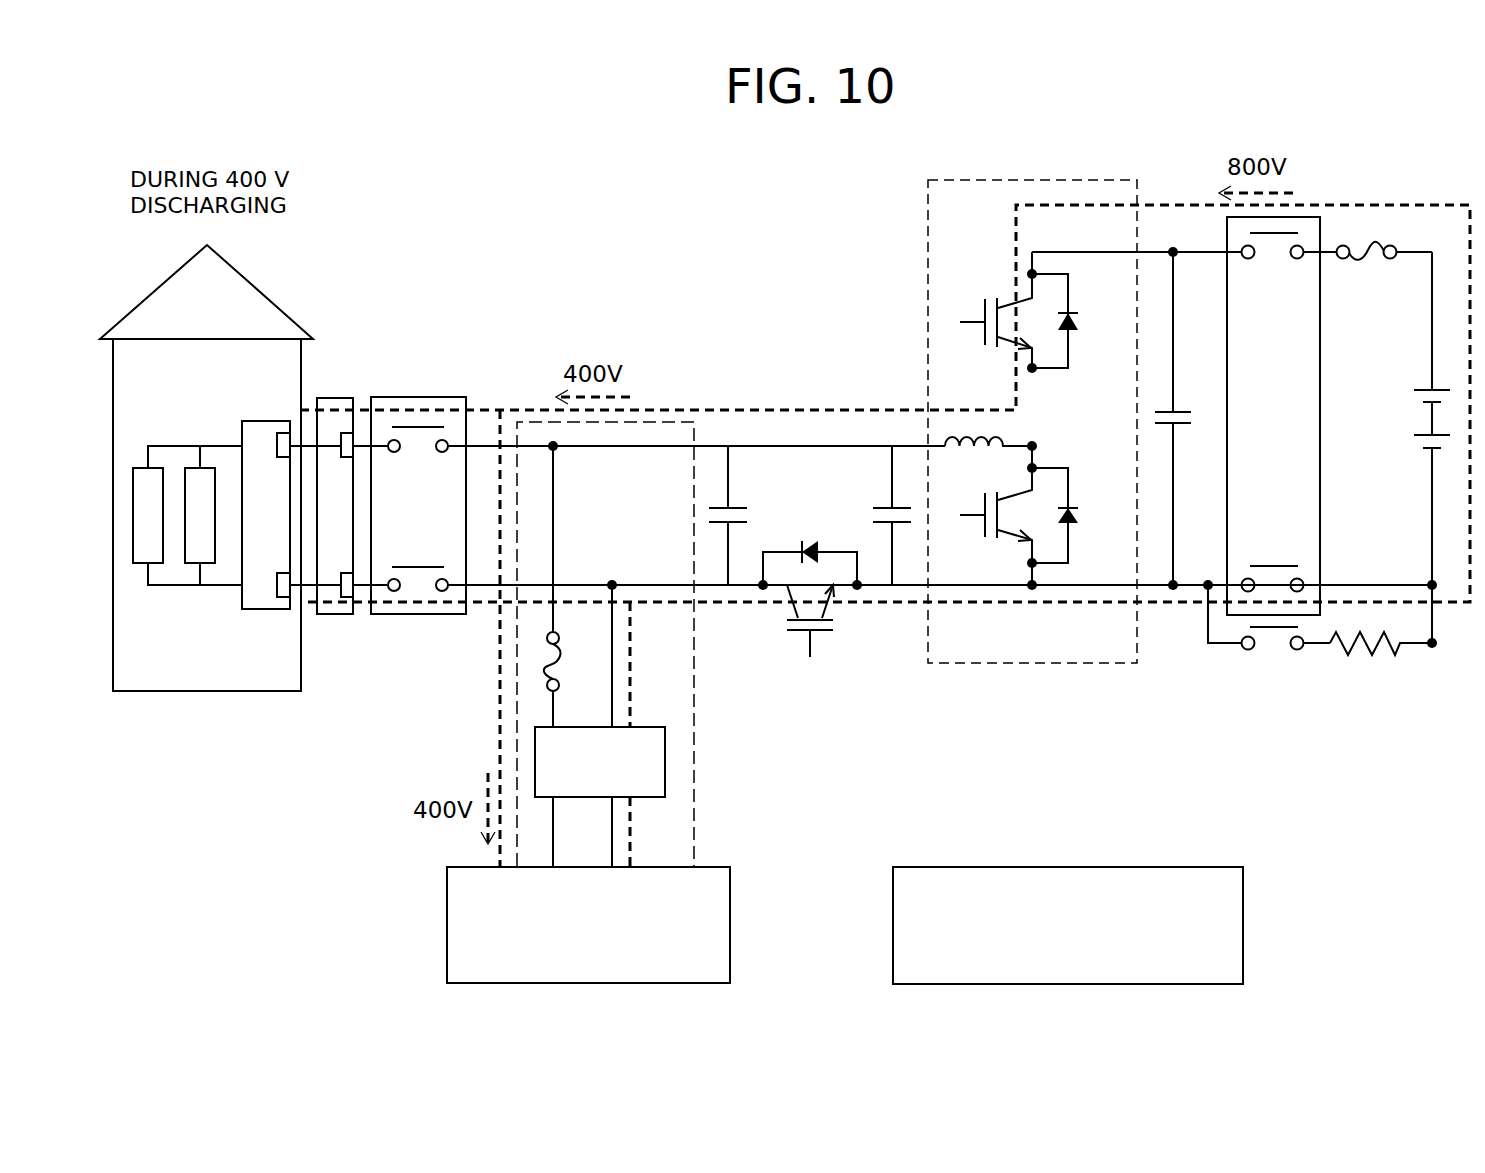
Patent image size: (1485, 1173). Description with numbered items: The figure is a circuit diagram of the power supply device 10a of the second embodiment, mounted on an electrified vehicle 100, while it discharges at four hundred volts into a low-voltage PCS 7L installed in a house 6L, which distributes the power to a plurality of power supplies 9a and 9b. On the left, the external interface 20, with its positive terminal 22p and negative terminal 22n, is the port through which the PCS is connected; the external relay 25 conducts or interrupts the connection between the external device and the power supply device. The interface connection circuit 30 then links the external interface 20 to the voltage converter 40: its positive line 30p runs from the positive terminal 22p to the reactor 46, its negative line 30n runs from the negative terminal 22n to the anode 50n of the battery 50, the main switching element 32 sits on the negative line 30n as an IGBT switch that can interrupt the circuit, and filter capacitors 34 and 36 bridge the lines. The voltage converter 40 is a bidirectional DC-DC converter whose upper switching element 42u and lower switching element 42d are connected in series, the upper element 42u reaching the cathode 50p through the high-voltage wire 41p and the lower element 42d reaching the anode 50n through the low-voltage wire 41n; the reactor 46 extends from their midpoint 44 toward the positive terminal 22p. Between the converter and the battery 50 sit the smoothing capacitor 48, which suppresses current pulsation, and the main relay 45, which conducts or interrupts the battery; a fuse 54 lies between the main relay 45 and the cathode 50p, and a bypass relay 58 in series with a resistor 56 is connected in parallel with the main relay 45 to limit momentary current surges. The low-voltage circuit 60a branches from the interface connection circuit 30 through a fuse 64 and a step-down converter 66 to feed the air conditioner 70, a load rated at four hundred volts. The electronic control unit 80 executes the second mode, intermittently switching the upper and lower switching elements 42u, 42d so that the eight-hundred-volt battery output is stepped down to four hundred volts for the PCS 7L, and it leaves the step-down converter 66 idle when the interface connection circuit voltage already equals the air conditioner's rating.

The house 6L is at (173, 298).
The low-voltage PCS 7L is at (262, 612).
The power supply 9a is at (200, 515).
The power supply 9b is at (149, 515).
The external interface 20 is at (333, 617).
The positive terminal 22p is at (355, 443).
The negative terminal 22n is at (350, 588).
The external relay 25 is at (440, 397).
The interface connection circuit 30 is at (778, 453).
The positive line 30p is at (827, 445).
The negative line 30n is at (880, 590).
The main switching element 32 is at (810, 668).
The filter capacitor 34 is at (745, 461).
The filter capacitor 36 is at (877, 461).
The voltage converter 40 is at (1000, 180).
The high-voltage wire 41p is at (1153, 247).
The low-voltage wire 41n is at (1192, 590).
The upper switching element 42u is at (1050, 263).
The lower switching element 42d is at (1050, 573).
The midpoint 44 is at (1043, 443).
The main relay 45 is at (1310, 213).
The reactor 46 is at (973, 433).
The smoothing capacitor 48 is at (1193, 407).
The battery 50 is at (1391, 450).
The cathode 50p is at (1423, 390).
The anode 50n is at (1420, 453).
The fuse 54 is at (1340, 243).
The resistor 56 is at (1360, 648).
The bypass relay 58 is at (1273, 648).
The low-voltage circuit 60a is at (695, 792).
The fuse 64 is at (547, 685).
The step-down converter 66 is at (683, 762).
The air conditioner 70 is at (730, 925).
The electronic control unit 80 is at (1245, 925).
The electrified vehicle 100 is at (577, 238).
The power supply device 10a is at (863, 202).